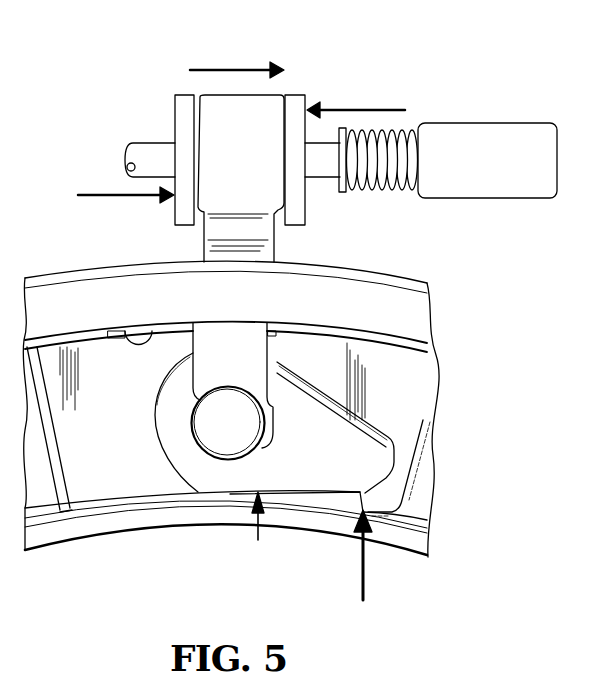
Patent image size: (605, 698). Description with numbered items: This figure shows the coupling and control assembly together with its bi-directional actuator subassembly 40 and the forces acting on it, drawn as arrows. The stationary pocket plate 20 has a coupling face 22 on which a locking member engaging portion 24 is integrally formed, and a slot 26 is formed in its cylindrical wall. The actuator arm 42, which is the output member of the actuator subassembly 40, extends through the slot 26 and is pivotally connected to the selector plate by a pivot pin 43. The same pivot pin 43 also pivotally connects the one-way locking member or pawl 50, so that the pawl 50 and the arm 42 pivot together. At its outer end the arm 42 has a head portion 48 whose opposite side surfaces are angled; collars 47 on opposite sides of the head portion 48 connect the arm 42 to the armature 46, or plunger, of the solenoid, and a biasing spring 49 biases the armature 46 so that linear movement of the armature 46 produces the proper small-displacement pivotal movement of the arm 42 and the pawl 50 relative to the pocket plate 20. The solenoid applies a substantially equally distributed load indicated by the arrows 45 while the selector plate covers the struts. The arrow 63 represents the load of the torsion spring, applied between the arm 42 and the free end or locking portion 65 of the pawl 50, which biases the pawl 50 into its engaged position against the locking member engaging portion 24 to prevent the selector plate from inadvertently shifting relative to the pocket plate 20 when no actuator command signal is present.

The pocket plate 20 is at (388, 258).
The coupling face 22 is at (123, 480).
The locking member engaging portion 24 is at (345, 500).
The slot 26 is at (120, 330).
The bi-directional actuator subassembly 40 is at (405, 48).
The actuator arm 42 is at (284, 90).
The pivot pin 43 is at (230, 443).
The arrows 45 is at (248, 70).
The armature 46 is at (147, 143).
The collars 47 is at (177, 108).
The head portion 48 is at (255, 182).
The biasing spring 49 is at (392, 140).
The pawl 50 is at (258, 515).
The arrow 63 is at (363, 570).
The locking portion 65 is at (362, 497).